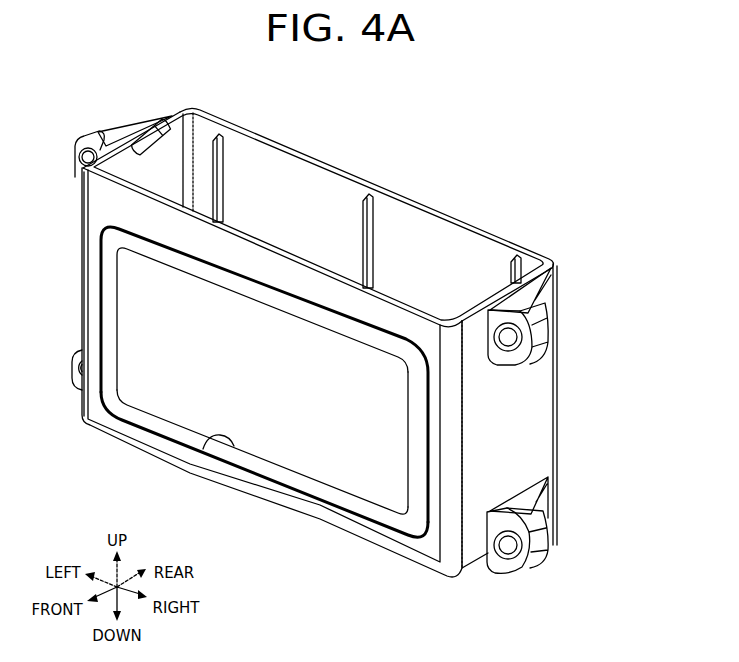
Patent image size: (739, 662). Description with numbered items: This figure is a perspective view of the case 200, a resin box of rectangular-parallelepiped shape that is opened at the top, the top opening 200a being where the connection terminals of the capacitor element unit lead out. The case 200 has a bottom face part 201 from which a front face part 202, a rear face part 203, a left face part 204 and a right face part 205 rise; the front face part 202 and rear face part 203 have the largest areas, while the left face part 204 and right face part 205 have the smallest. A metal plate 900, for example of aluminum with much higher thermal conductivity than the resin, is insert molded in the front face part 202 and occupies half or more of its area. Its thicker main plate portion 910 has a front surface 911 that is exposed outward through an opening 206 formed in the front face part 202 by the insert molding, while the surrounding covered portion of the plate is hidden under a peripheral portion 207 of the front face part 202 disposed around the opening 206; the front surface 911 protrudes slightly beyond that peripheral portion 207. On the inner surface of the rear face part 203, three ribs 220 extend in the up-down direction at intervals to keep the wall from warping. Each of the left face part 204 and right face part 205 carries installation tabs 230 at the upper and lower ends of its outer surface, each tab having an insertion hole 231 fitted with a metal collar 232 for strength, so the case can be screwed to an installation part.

The case 200 is at (372, 170).
The opening 200a is at (405, 207).
The bottom face part 201 is at (137, 447).
The front face part 202 is at (252, 284).
The rear face part 203 is at (320, 185).
The left face part 204 is at (168, 157).
The right face part 205 is at (533, 453).
The opening 206 is at (217, 436).
The peripheral portion 207 is at (278, 476).
The rib 220 is at (225, 172).
The installation tab 230 is at (86, 130).
The insertion hole 231 is at (82, 160).
The metal collar 232 is at (117, 126).
The metal plate 900 is at (133, 327).
The main plate portion 910 is at (410, 470).
The front surface 911 is at (350, 482).